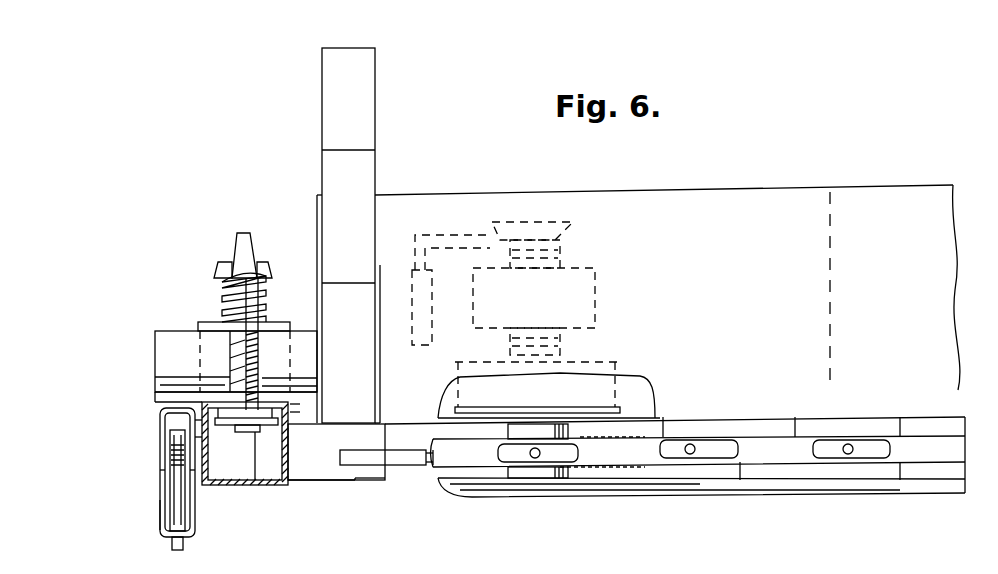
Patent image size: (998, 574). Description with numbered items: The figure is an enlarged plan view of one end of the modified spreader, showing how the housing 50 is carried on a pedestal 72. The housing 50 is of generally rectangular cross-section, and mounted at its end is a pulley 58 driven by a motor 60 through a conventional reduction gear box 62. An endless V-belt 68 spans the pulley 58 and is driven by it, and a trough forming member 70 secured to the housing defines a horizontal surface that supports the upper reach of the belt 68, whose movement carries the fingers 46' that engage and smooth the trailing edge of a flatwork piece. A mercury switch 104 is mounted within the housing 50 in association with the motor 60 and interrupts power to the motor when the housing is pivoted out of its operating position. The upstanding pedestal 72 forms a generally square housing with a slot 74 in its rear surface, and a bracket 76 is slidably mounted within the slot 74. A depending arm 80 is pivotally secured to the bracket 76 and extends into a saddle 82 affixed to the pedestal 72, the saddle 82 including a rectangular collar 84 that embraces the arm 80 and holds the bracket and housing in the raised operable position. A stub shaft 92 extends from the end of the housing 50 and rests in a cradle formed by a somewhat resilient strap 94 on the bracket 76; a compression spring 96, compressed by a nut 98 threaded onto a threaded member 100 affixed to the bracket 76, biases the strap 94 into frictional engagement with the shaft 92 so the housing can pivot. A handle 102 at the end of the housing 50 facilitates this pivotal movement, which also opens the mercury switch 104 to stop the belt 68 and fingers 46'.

The handle 102 is at (360, 95).
The housing 50 is at (745, 203).
The nut 98 is at (248, 252).
The compression spring 96 is at (258, 296).
The strap 94 is at (210, 324).
The stub shaft 92 is at (172, 344).
The threaded member 100 is at (256, 380).
The bracket 76 is at (200, 401).
The pedestal 72 is at (266, 487).
The slot 74 is at (246, 444).
The saddle 82 is at (162, 438).
The depending arm 80 is at (181, 492).
The rectangular collar 84 is at (162, 512).
The fingers 46' is at (602, 485).
The trough forming member 70 is at (768, 477).
The endless V-belt 68 is at (620, 455).
The pulley 58 is at (432, 473).
The reduction gear box 62 is at (610, 380).
The motor 60 is at (595, 312).
The mercury switch 104 is at (418, 348).